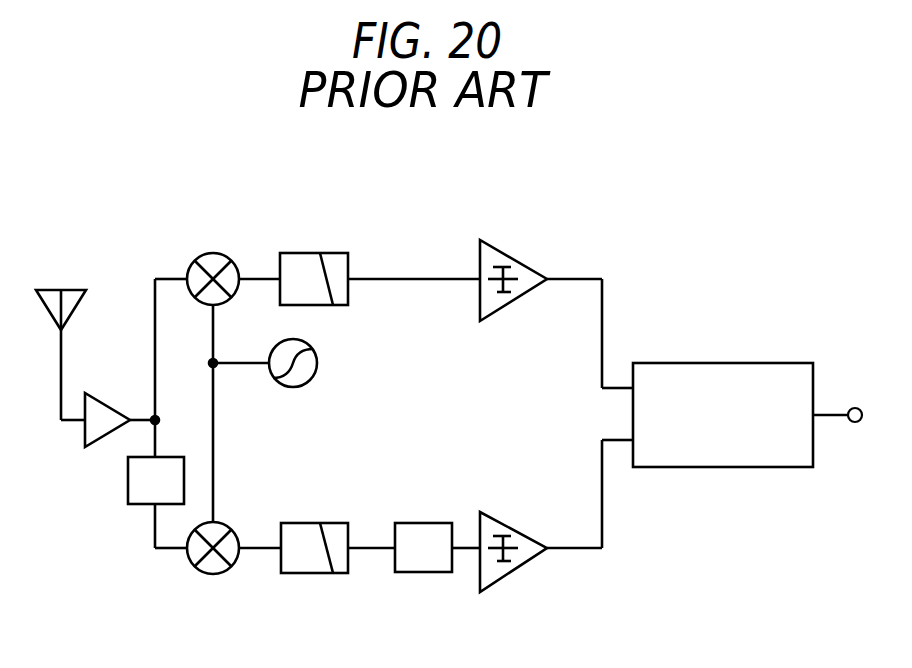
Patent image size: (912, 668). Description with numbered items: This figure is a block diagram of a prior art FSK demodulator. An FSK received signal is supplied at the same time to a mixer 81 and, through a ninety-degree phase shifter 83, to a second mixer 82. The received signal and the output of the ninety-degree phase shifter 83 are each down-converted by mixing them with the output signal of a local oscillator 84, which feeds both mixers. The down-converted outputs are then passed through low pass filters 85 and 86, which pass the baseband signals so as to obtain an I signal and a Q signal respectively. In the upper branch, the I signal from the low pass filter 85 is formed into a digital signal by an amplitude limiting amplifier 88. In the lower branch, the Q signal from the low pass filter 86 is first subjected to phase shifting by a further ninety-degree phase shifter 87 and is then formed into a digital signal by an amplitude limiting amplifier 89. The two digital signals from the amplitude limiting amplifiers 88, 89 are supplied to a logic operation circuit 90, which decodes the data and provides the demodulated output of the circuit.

The mixer 81 is at (229, 258).
The mixer 82 is at (229, 527).
The ninety-degree phase shifter 83 is at (160, 457).
The local oscillator 84 is at (317, 364).
The low pass filter 85 is at (332, 253).
The low pass filter 86 is at (322, 523).
The ninety-degree phase shifter 87 is at (420, 523).
The amplitude limiting amplifier 88 is at (534, 247).
The amplitude limiting amplifier 89 is at (514, 528).
The logic operation circuit 90 is at (758, 363).